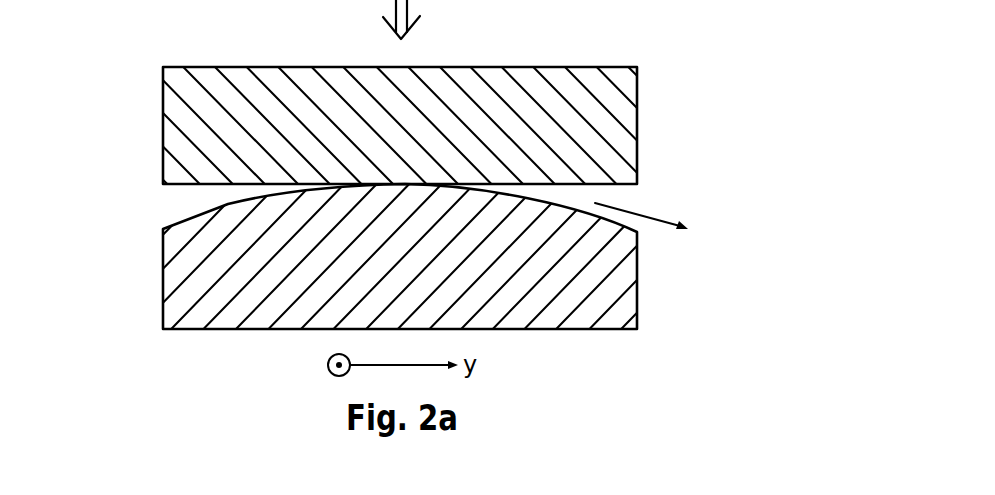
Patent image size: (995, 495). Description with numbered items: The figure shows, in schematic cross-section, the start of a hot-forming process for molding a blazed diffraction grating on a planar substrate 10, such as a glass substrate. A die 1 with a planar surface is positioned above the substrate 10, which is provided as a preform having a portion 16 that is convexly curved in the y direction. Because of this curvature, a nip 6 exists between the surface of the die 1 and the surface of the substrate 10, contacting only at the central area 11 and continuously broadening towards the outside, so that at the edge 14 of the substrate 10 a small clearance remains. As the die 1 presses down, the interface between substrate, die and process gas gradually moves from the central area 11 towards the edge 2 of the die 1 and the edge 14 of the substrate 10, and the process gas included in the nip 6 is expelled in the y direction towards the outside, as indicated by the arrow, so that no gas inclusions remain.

The die 1 is at (628, 83).
The edge of the die 2 is at (203, 183).
The nip 6 is at (628, 199).
The substrate 10 is at (630, 323).
The central area 11 is at (401, 184).
The edge of the substrate 14 is at (173, 223).
The convexly curved portion 16 is at (248, 204).